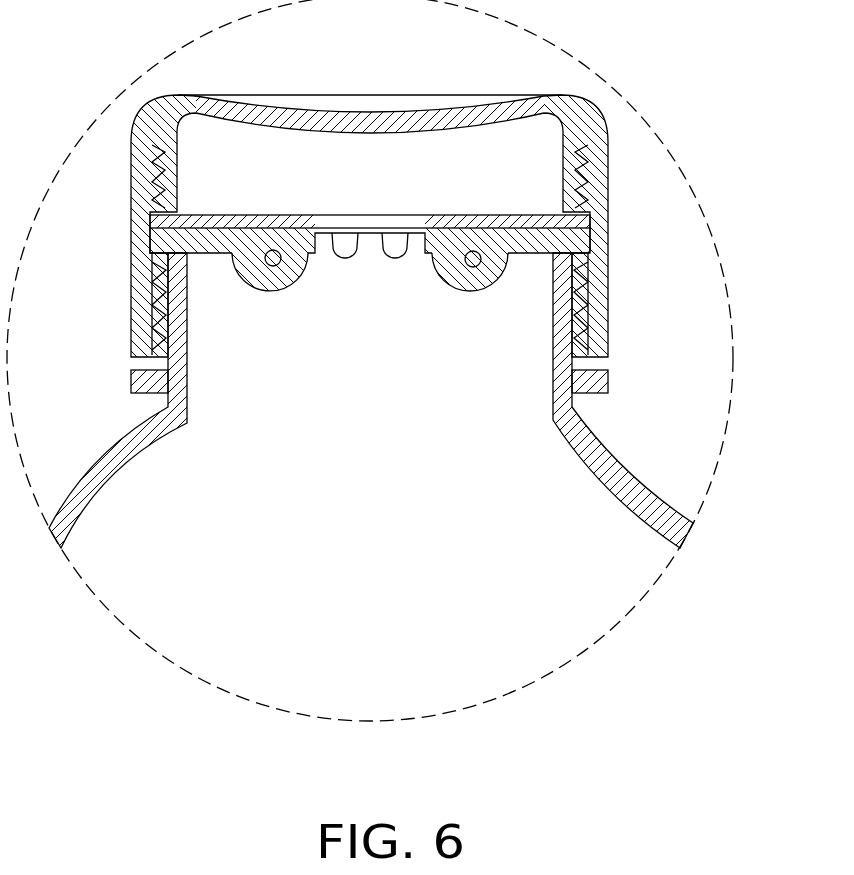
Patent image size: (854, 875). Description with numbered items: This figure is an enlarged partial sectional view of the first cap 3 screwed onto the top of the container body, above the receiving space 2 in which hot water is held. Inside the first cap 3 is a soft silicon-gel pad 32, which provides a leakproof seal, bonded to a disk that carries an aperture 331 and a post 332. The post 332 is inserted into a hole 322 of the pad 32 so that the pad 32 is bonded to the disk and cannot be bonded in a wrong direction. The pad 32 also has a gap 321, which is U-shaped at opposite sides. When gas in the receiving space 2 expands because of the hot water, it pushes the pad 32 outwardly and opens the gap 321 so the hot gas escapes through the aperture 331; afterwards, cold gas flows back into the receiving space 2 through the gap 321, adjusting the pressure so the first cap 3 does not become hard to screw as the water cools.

The receiving space 2 is at (553, 510).
The first cap 3 is at (622, 230).
The pad 32 is at (150, 233).
The gap 321 is at (325, 265).
The hole 322 is at (300, 287).
The aperture 331 is at (357, 213).
The post 332 is at (273, 249).